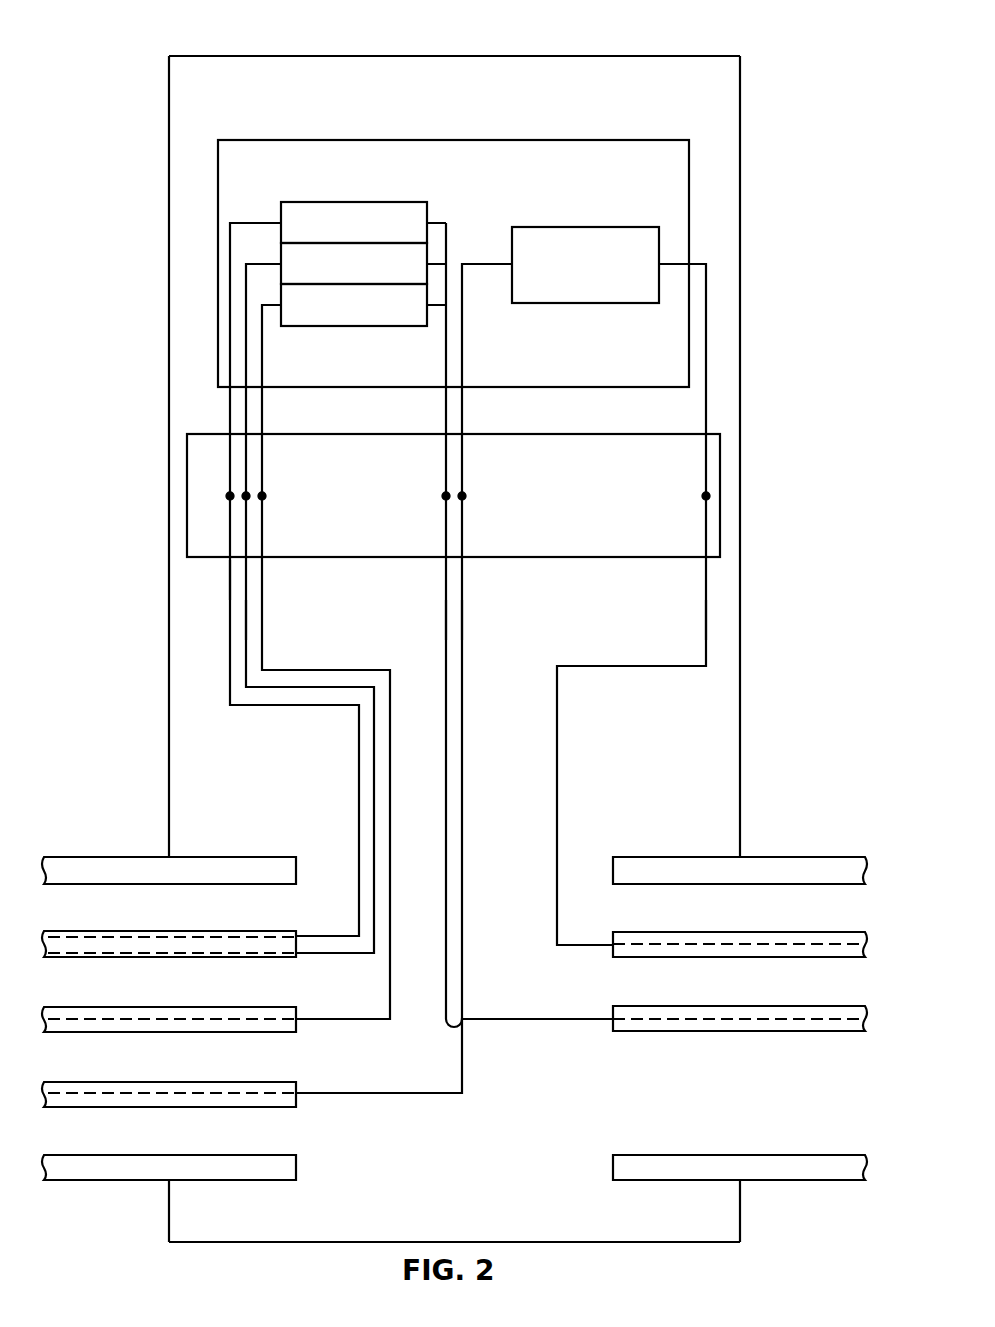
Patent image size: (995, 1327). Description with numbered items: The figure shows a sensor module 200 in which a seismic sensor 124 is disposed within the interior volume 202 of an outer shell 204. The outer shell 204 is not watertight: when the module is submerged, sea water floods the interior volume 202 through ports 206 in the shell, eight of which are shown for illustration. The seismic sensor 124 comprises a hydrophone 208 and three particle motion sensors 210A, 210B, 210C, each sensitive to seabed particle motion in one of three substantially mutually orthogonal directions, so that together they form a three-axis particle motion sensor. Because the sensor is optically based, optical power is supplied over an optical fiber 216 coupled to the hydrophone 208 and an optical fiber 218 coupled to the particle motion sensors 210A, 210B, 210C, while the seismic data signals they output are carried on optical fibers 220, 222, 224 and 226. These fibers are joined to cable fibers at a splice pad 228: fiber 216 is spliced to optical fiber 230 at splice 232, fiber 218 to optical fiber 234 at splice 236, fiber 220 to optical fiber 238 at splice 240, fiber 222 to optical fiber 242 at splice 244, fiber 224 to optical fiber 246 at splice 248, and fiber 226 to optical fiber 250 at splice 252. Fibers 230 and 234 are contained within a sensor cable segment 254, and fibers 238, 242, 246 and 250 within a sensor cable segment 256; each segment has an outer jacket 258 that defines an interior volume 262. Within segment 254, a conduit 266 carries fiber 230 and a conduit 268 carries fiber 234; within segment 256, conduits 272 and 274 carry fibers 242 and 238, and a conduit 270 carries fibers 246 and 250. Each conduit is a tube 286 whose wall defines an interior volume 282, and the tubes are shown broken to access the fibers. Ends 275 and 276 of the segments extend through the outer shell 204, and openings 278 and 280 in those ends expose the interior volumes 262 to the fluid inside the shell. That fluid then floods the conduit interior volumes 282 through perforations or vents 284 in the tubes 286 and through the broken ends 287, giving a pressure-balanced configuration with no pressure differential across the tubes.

The sensor module 200 is at (143, 40).
The interior volume 202 is at (282, 93).
The outer shell 204 is at (169, 165).
The ports 206 is at (742, 192).
The seismic sensor 124 is at (283, 140).
The hydrophone 208 is at (598, 227).
The particle motion sensor 210A is at (381, 236).
The particle motion sensor 210B is at (381, 277).
The particle motion sensor 210C is at (381, 319).
The optical fiber 216 is at (708, 400).
The optical fiber 218 is at (446, 377).
The optical fiber 220 is at (462, 375).
The optical fiber 222 is at (262, 385).
The optical fiber 224 is at (246, 303).
The optical fiber 226 is at (230, 250).
The splice pad 228 is at (603, 435).
The optical fiber 230 is at (706, 612).
The splice 232 is at (704, 496).
The optical fiber 234 is at (462, 612).
The splice 236 is at (444, 496).
The optical fiber 238 is at (446, 612).
The splice 240 is at (464, 496).
The optical fiber 242 is at (335, 670).
The splice 244 is at (264, 496).
The optical fiber 246 is at (246, 615).
The splice 248 is at (245, 494).
The optical fiber 250 is at (230, 587).
The splice 252 is at (228, 496).
The sensor cable segment 254 is at (855, 853).
The sensor cable segment 256 is at (80, 853).
The outer jacket 258 is at (55, 1182).
The interior volume 262 is at (97, 1138).
The conduit 266 is at (842, 963).
The conduit 268 is at (800, 1038).
The conduit 270 is at (272, 964).
The conduit 272 is at (252, 1037).
The conduit 274 is at (215, 1110).
The end 275 is at (622, 853).
The end 276 is at (287, 853).
The opening 278 is at (628, 903).
The opening 280 is at (297, 903).
The interior volume 282 is at (853, 1030).
The perforations 284 is at (239, 932).
The tube 286 is at (100, 932).
The broken ends 287 is at (298, 958).